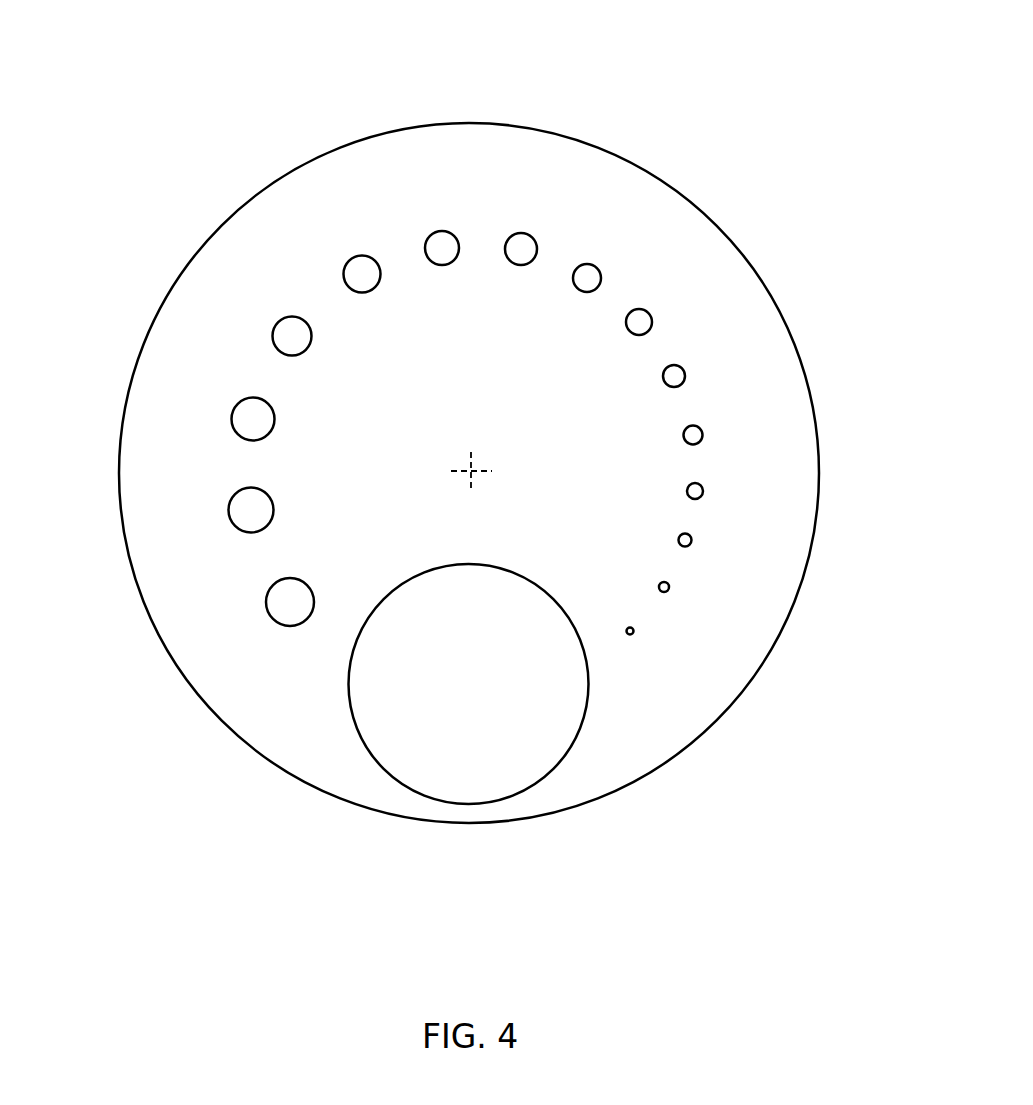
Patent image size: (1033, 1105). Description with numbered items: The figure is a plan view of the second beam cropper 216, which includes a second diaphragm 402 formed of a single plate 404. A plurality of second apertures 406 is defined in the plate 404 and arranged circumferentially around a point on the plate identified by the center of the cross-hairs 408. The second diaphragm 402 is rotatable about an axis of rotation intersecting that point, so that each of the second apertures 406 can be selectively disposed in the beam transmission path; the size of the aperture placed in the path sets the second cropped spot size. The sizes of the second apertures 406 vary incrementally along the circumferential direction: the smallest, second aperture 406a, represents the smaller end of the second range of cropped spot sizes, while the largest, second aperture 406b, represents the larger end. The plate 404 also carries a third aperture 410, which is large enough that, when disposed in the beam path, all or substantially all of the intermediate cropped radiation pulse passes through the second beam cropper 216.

The second beam cropper 216 is at (288, 62).
The second diaphragm 402 is at (555, 158).
The plate 404 is at (622, 182).
The second apertures 406 is at (644, 316).
The second aperture 406a is at (633, 640).
The second aperture 406b is at (268, 601).
The cross-hairs 408 is at (469, 465).
The third aperture 410 is at (537, 763).